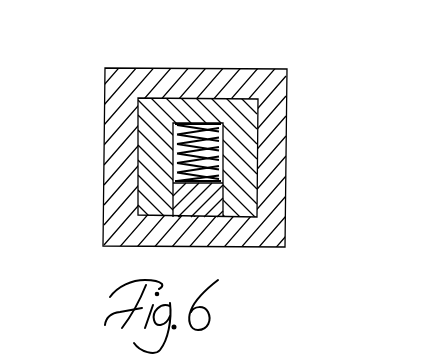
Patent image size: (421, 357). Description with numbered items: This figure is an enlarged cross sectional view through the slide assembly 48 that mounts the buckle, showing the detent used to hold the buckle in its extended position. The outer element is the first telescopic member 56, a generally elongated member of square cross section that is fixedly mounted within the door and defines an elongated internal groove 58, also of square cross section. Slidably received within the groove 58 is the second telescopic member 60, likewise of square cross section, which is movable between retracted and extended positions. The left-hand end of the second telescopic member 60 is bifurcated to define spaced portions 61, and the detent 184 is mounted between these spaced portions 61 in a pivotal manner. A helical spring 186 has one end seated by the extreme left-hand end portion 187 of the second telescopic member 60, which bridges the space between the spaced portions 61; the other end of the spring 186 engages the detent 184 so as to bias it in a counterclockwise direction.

The slide assembly 48 is at (298, 176).
The first telescopic member 56 is at (115, 105).
The elongated internal groove 58 is at (226, 103).
The second telescopic member 60 is at (258, 102).
The spaced portions 61 is at (146, 192).
The detent 184 is at (213, 215).
The helical spring 186 is at (176, 140).
The extreme left-hand end portion 187 is at (193, 103).